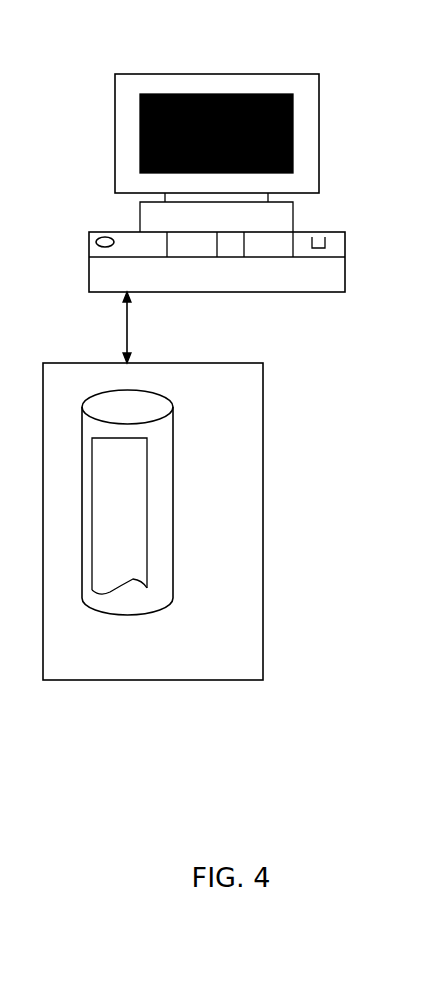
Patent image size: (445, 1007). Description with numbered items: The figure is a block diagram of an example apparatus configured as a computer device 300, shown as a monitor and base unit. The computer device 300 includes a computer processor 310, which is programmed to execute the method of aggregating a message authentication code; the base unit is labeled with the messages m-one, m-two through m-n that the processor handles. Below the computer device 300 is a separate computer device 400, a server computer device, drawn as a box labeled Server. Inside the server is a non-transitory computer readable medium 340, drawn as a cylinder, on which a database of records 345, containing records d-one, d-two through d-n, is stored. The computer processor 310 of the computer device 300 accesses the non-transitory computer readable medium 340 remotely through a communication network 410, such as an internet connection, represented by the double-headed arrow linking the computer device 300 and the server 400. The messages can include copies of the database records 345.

The computer device 300 is at (322, 66).
The computer processor 310 is at (335, 272).
The communication network 410 is at (128, 335).
The separate computer device 400 is at (263, 435).
The non-transitory computer readable medium 340 is at (173, 437).
The database of records 345 is at (147, 472).